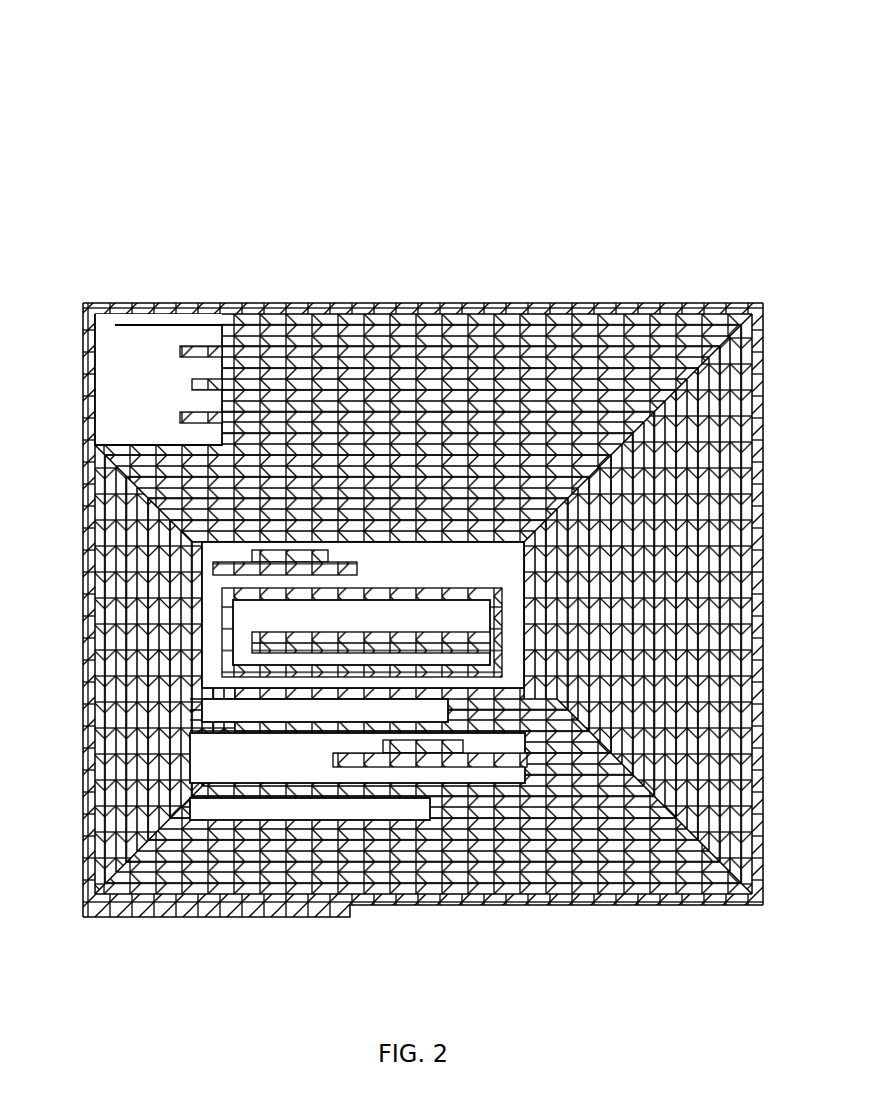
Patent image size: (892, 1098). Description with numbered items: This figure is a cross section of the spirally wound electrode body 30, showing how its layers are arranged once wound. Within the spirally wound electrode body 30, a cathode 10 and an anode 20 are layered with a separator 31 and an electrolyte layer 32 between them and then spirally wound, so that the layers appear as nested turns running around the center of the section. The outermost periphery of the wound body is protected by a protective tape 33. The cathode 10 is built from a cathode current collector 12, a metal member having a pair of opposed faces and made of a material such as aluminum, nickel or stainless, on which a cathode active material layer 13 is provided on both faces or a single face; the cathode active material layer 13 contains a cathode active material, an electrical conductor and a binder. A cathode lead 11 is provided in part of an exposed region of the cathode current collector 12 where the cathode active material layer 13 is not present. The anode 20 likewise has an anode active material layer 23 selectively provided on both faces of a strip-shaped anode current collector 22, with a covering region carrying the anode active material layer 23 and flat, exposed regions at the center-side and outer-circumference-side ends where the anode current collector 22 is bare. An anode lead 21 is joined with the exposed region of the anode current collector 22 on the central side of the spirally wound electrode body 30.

The cathode 10 is at (275, 200).
The cathode lead 11 is at (225, 452).
The cathode current collector 12 is at (212, 390).
The cathode active material layer 13 is at (270, 555).
The anode 20 is at (515, 200).
The anode lead 21 is at (403, 748).
The anode current collector 22 is at (397, 320).
The anode active material layer 23 is at (537, 417).
The spirally wound electrode body 30 is at (423, 464).
The separator 31 is at (578, 352).
The electrolyte layer 32 is at (627, 420).
The protective tape 33 is at (718, 302).